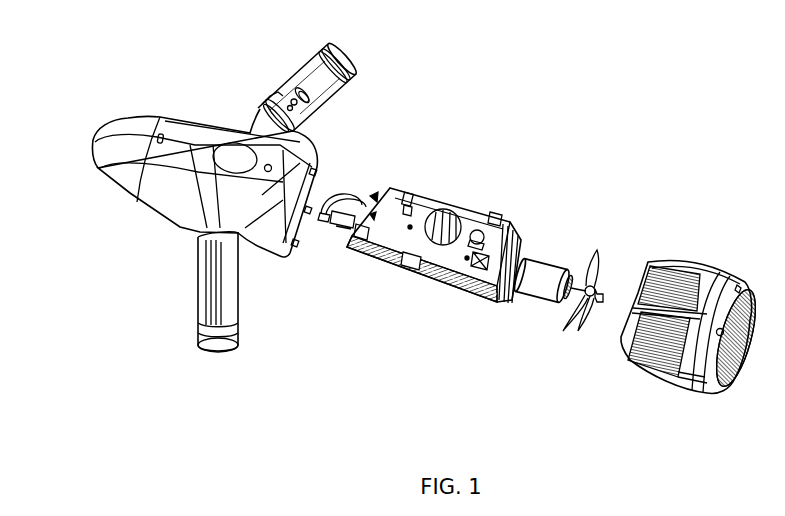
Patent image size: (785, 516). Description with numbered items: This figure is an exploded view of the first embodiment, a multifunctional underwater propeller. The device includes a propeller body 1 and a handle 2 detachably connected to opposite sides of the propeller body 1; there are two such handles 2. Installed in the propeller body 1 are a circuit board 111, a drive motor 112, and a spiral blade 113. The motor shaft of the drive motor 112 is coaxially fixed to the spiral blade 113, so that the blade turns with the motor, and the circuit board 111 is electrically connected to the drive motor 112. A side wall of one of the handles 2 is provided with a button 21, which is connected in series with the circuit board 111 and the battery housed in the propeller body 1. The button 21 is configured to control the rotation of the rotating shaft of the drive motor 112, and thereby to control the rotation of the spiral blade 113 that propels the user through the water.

The propeller body 1 is at (165, 190).
The handle 2 is at (207, 292).
The button 21 is at (292, 92).
The circuit board 111 is at (430, 220).
The drive motor 112 is at (543, 268).
The spiral blade 113 is at (598, 262).